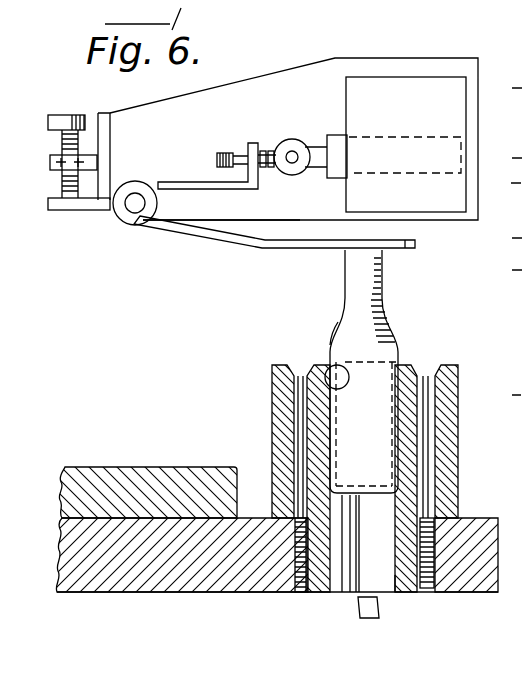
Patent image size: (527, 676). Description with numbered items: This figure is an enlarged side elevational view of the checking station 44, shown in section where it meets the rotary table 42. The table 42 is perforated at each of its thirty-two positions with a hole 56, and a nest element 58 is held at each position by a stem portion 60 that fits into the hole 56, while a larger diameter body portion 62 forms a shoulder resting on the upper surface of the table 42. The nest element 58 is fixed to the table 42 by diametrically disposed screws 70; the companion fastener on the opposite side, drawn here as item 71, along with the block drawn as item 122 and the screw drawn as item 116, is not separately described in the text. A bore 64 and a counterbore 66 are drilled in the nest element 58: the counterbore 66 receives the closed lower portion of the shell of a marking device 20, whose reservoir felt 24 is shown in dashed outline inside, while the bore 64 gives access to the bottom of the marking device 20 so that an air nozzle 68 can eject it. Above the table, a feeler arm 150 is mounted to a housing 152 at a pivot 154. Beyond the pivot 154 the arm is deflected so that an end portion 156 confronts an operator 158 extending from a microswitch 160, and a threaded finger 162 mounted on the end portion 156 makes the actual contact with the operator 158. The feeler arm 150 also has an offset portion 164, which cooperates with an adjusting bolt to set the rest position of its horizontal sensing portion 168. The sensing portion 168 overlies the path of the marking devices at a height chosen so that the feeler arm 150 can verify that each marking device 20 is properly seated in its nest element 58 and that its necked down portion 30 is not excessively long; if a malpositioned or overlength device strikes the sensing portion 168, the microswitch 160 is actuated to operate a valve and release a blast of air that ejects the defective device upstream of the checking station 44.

The adjusting screw 116 is at (58, 143).
The housing 152 is at (248, 75).
The pivot 154 is at (135, 197).
The end portion 156 is at (257, 142).
The operator 158 is at (292, 137).
The microswitch 160 is at (425, 83).
The threaded finger 162 is at (268, 175).
The offset portion 164 is at (55, 209).
The checking station 44 is at (146, 258).
The feeler arm 150 is at (229, 243).
The sensing portion 168 is at (407, 250).
The necked down portion 30 is at (360, 293).
The marking device 20 is at (401, 342).
The reservoir felt 24 is at (338, 322).
The counterbore 66 is at (330, 346).
The nest element 58 is at (464, 373).
The body portion 62 is at (272, 427).
The screws 70 is at (302, 397).
The guide pin 71 is at (432, 450).
The block 122 is at (111, 463).
The stem portion 60 is at (293, 576).
The table 42 is at (498, 514).
The bore 64 is at (343, 533).
The air nozzle 68 is at (356, 608).
The hole 56 is at (395, 580).